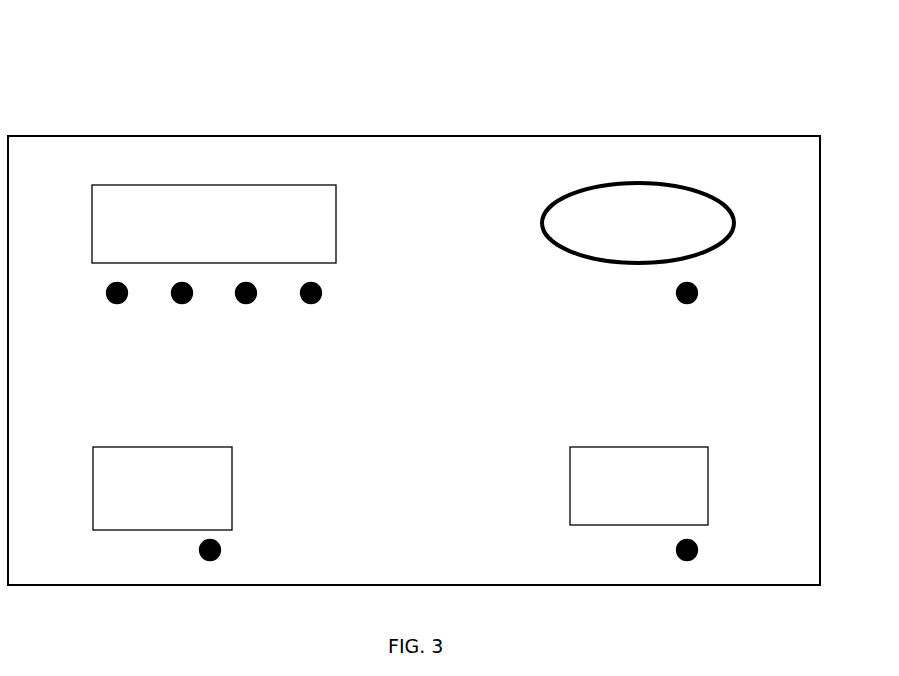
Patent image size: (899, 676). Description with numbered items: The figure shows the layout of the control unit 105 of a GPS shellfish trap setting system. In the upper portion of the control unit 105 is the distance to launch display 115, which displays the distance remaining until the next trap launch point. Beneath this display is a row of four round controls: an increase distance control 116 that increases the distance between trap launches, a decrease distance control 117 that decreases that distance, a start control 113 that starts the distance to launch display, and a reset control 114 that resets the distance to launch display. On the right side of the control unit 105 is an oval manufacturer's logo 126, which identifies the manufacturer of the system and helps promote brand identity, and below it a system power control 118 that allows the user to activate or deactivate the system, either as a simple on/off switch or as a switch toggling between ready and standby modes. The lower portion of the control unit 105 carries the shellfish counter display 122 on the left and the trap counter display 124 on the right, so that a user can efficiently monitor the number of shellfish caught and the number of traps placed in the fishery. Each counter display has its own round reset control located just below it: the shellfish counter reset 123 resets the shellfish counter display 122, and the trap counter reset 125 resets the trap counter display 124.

The control unit 105 is at (153, 122).
The distance to launch display 115 is at (336, 203).
The increase distance control 116 is at (117, 303).
The decrease distance control 117 is at (182, 303).
The start control 113 is at (246, 303).
The reset control 114 is at (311, 303).
The manufacturer's logo 126 is at (720, 198).
The system power control 118 is at (697, 292).
The shellfish counter display 122 is at (232, 467).
The shellfish counter reset 123 is at (220, 549).
The trap counter display 124 is at (708, 467).
The trap counter reset 125 is at (697, 549).